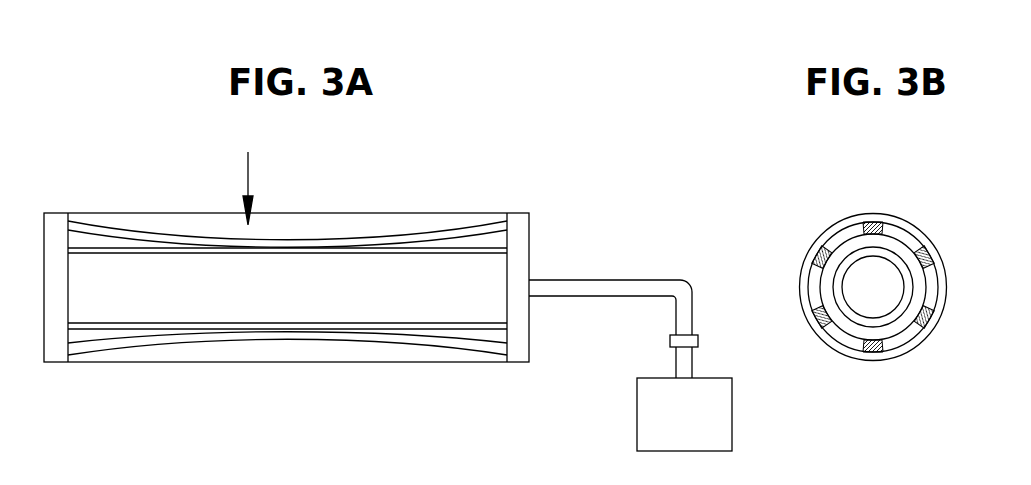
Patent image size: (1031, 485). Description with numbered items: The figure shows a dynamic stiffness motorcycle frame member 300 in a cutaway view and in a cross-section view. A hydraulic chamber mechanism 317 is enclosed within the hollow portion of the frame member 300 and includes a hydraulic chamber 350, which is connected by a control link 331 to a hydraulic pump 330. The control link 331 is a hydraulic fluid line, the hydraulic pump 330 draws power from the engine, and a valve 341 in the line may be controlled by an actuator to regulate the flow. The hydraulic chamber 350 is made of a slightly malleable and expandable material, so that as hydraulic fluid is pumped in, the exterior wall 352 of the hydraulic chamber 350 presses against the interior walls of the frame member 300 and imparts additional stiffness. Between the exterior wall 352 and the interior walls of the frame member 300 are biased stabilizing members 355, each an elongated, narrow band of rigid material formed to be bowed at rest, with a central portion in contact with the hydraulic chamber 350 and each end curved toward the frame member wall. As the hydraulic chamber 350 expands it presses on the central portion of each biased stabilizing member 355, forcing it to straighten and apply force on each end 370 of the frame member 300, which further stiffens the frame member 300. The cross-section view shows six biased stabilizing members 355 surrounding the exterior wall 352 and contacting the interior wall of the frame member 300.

In FIG. 3A, the dynamic stiffness motorcycle frame member 300 is at (369, 198).
In FIG. 3B, the dynamic stiffness motorcycle frame member 300 is at (812, 209).
In FIG. 3A, the hydraulic chamber mechanism 317 is at (254, 175).
In FIG. 3A, the hydraulic pump 330 is at (704, 428).
In FIG. 3A, the control link 331 is at (570, 280).
In FIG. 3A, the valve 341 is at (670, 340).
In FIG. 3A, the hydraulic chamber 350 is at (448, 305).
In FIG. 3B, the hydraulic chamber 350 is at (880, 284).
In FIG. 3A, the exterior wall 352 is at (425, 250).
In FIG. 3B, the exterior wall 352 is at (852, 324).
In FIG. 3A, the biased stabilizing member 355 is at (356, 240).
In FIG. 3B, the biased stabilizing member 355 is at (898, 217).
In FIG. 3A, the end 370 is at (52, 220).